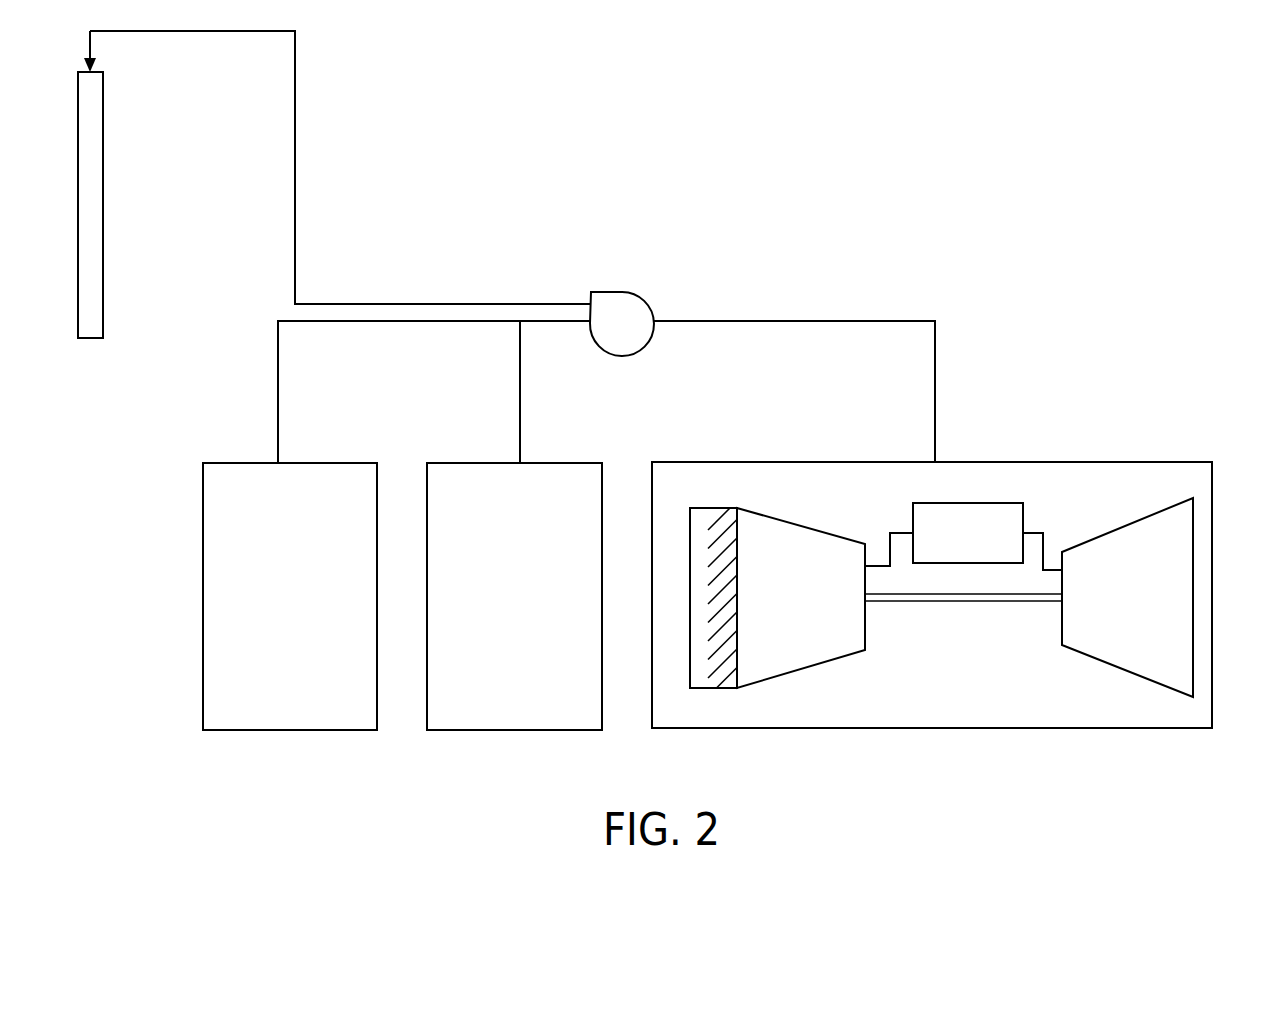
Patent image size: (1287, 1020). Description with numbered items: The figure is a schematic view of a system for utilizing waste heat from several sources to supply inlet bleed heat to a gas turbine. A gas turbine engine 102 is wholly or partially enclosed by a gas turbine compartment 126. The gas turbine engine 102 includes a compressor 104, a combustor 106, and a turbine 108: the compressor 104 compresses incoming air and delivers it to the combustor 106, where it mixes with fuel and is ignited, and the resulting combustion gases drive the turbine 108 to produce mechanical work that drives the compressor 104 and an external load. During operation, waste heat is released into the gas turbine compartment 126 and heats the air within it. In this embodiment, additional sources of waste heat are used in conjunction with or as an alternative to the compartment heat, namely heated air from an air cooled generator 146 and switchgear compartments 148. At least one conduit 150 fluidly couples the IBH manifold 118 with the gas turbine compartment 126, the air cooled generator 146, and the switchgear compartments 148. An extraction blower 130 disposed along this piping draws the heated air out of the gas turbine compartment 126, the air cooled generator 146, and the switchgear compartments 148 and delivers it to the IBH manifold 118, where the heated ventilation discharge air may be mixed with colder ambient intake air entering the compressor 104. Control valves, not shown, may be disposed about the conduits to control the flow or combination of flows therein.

The gas turbine engine 102 is at (1012, 490).
The compressor 104 is at (807, 668).
The combustor 106 is at (968, 503).
The turbine 108 is at (1127, 672).
The IBH manifold 118 is at (103, 223).
The gas turbine compartment 126 is at (1053, 462).
The extraction blower 130 is at (647, 309).
The air cooled generator 146 is at (290, 596).
The switchgear compartments 148 is at (514, 596).
The conduit 150 is at (487, 304).